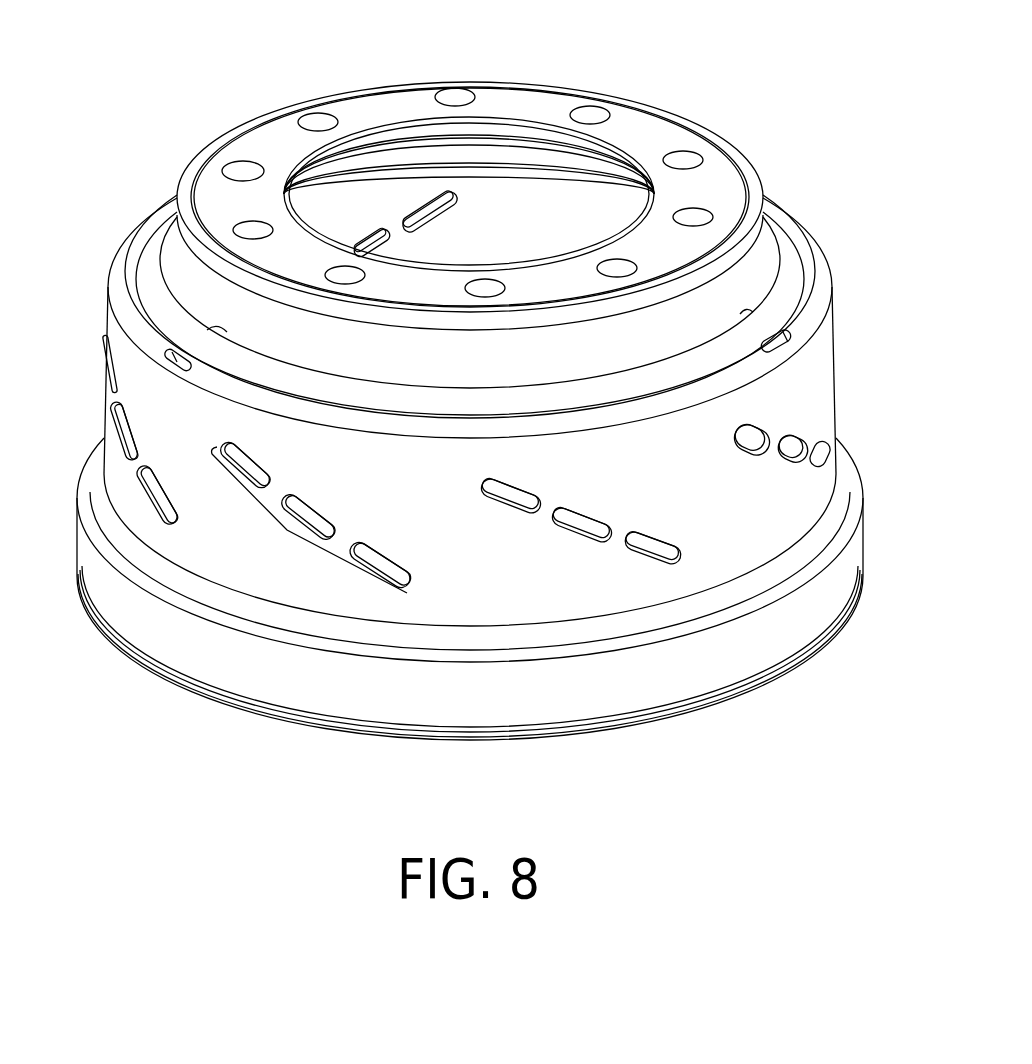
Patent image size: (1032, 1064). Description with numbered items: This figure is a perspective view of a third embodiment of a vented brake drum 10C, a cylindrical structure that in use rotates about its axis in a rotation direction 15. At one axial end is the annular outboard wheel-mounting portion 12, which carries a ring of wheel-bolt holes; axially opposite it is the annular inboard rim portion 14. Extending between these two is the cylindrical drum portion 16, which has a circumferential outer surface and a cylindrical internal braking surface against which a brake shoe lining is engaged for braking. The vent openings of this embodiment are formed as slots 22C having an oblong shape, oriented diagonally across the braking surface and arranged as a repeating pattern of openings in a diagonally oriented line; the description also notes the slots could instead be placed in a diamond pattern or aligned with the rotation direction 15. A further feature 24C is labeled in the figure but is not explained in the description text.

The vented brake drum 10C is at (806, 113).
The annular outboard wheel-mounting portion 12 is at (519, 97).
The annular inboard rim portion 14 is at (802, 632).
The rotation direction 15 is at (739, 478).
The drum portion 16 is at (840, 297).
The slots 22C is at (557, 523).
The slots 24C is at (288, 528).